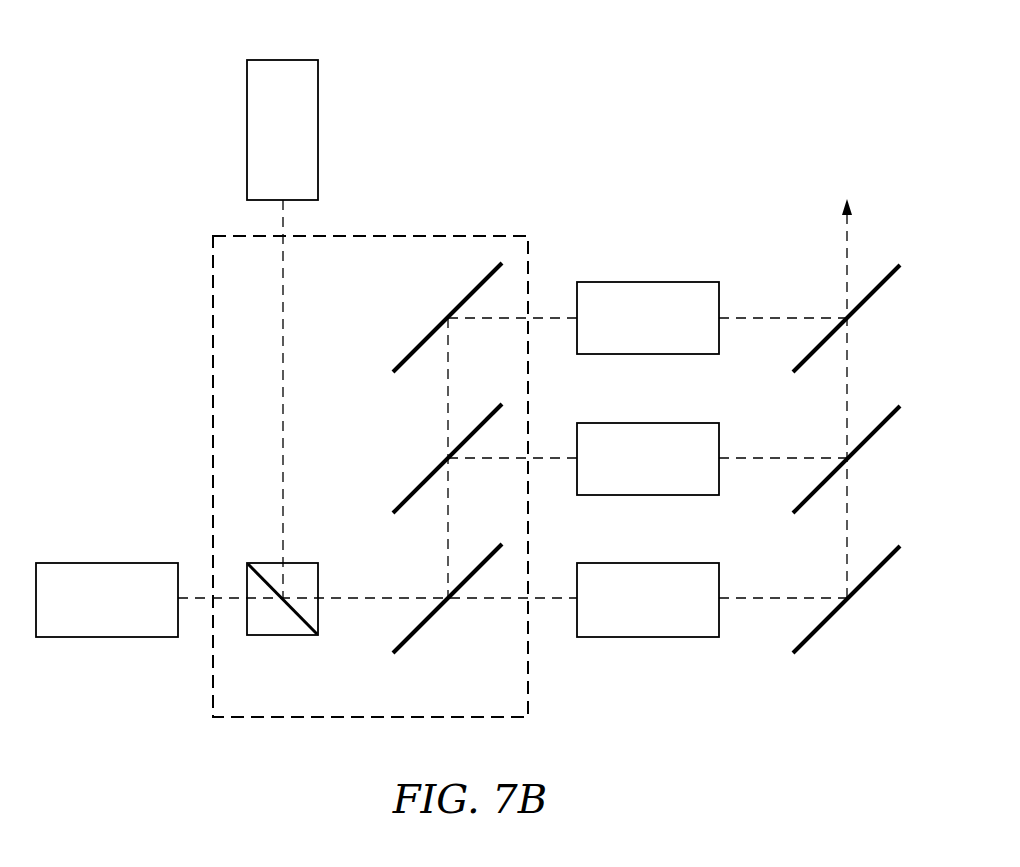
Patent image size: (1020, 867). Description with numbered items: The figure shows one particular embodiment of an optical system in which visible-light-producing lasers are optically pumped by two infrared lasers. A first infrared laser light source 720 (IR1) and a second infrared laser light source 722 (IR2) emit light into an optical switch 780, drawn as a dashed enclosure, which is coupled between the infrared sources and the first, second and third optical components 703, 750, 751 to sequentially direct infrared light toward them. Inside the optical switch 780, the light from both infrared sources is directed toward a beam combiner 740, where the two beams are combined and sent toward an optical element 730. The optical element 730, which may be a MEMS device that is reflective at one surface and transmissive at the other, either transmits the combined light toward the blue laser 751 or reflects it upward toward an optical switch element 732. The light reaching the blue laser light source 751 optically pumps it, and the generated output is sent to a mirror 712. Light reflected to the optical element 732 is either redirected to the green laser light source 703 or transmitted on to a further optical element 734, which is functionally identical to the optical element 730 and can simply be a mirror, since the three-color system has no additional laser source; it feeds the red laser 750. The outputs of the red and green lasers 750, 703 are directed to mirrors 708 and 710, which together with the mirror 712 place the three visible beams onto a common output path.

The optical component 703 is at (648, 422).
The mirror 708 is at (862, 296).
The mirror 710 is at (862, 438).
The mirror 712 is at (862, 576).
The first infrared laser light source 720 is at (105, 638).
The second infrared laser light source 722 is at (278, 59).
The optical element 730 is at (419, 629).
The optical switch element 732 is at (422, 480).
The optical element 734 is at (425, 339).
The beam combiner 740 is at (278, 636).
The optical component 750 is at (648, 281).
The optical component 751 is at (648, 639).
The optical switch 780 is at (396, 234).